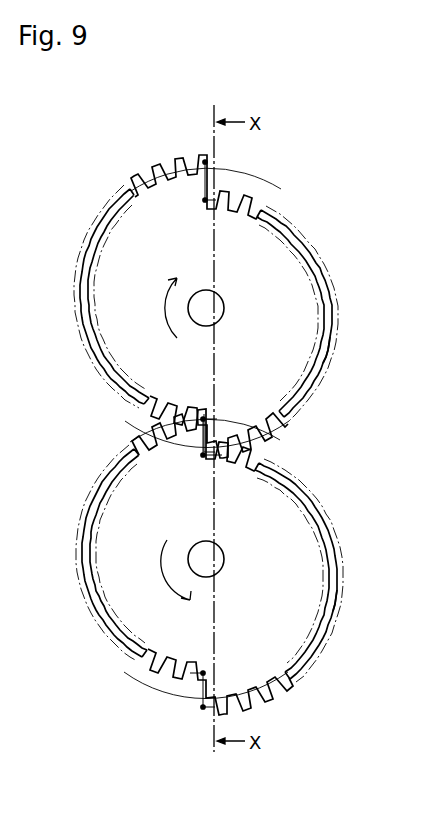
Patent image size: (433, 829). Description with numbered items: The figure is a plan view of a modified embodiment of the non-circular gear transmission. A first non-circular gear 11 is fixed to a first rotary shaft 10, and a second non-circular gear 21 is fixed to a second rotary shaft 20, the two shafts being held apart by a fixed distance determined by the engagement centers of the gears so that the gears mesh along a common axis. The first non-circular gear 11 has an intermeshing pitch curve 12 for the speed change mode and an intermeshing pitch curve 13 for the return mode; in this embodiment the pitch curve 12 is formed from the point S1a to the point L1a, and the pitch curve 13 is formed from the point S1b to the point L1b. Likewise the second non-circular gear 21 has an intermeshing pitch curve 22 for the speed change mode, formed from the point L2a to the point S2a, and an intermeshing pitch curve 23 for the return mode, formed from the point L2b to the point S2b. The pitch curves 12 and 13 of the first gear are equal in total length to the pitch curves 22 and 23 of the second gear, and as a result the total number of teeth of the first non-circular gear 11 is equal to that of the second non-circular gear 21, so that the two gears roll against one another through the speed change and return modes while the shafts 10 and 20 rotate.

The first rotary shaft 10 is at (220, 546).
The first non-circular gear 11 is at (305, 576).
The intermeshing pitch curve of the first non-circular gear in the speed change mode 12 is at (334, 598).
The intermeshing pitch curve of the first non-circular gear in the return mode 13 is at (88, 568).
The second rotary shaft 20 is at (218, 294).
The second non-circular gear 21 is at (290, 288).
The intermeshing pitch curve of the second non-circular gear in the speed change mod 22 is at (330, 358).
The intermeshing pitch curve of the second non-circular gear in the return mode 23 is at (87, 285).
The point L1a is at (203, 707).
The point L1b is at (203, 419).
The point L2a is at (210, 455).
The point L2b is at (205, 162).
The point S1a is at (203, 455).
The point S1b is at (203, 673).
The point S2a is at (205, 200).
The point S2b is at (203, 419).